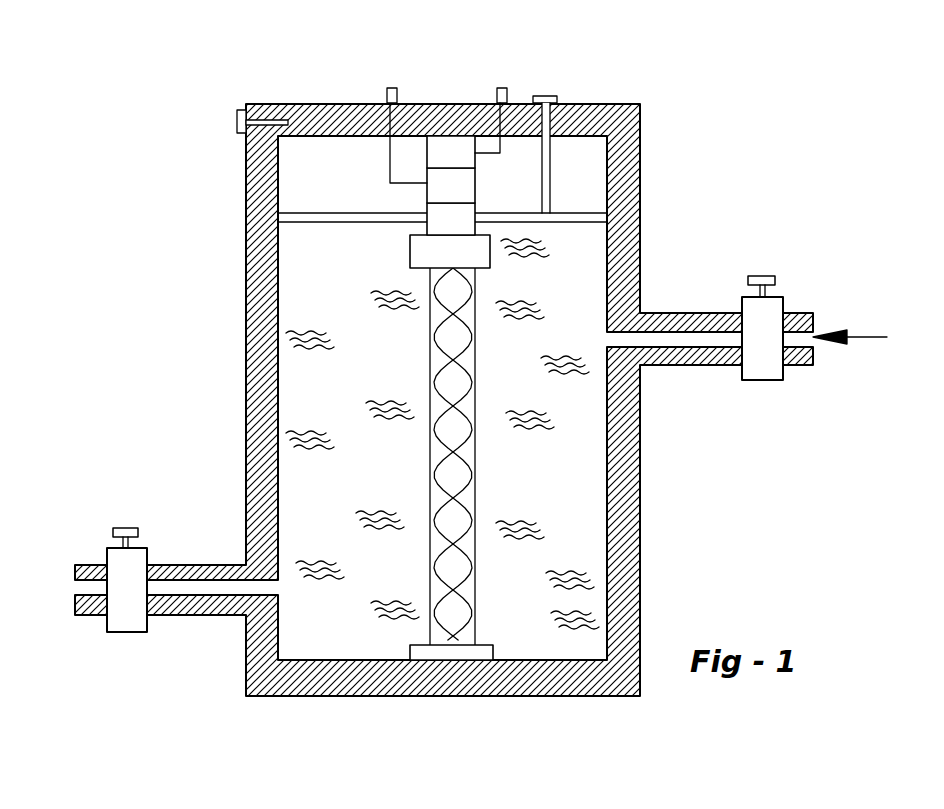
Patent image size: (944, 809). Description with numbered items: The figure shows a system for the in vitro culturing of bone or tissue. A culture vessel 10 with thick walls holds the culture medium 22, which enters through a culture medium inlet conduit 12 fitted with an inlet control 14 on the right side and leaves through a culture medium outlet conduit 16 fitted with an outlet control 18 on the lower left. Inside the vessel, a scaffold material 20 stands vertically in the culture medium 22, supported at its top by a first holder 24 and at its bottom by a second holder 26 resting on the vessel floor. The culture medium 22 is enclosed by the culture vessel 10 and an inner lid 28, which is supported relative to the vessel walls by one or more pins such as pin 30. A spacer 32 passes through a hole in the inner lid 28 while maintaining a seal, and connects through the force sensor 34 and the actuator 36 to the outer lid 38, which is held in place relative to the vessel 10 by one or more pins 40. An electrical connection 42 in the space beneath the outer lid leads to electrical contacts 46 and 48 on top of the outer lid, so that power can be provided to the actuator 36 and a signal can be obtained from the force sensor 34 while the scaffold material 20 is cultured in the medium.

The culture vessel 10 is at (640, 163).
The culture medium inlet conduit 12 is at (660, 365).
The inlet control 14 is at (777, 307).
The culture medium outlet conduit 16 is at (97, 603).
The outlet control 18 is at (112, 557).
The scaffold material 20 is at (445, 497).
The culture medium 22 is at (442, 434).
The first holder 24 is at (415, 251).
The second holder 26 is at (483, 652).
The inner lid 28 is at (320, 217).
The pin 30 is at (543, 96).
The spacer 32 is at (451, 217).
The force sensor 34 is at (451, 184).
The actuator 36 is at (451, 150).
The outer lid 38 is at (430, 104).
The pin 40 is at (237, 125).
The electrical connection 42 is at (328, 160).
The electrical contact 46 is at (390, 88).
The electrical contact 48 is at (503, 88).